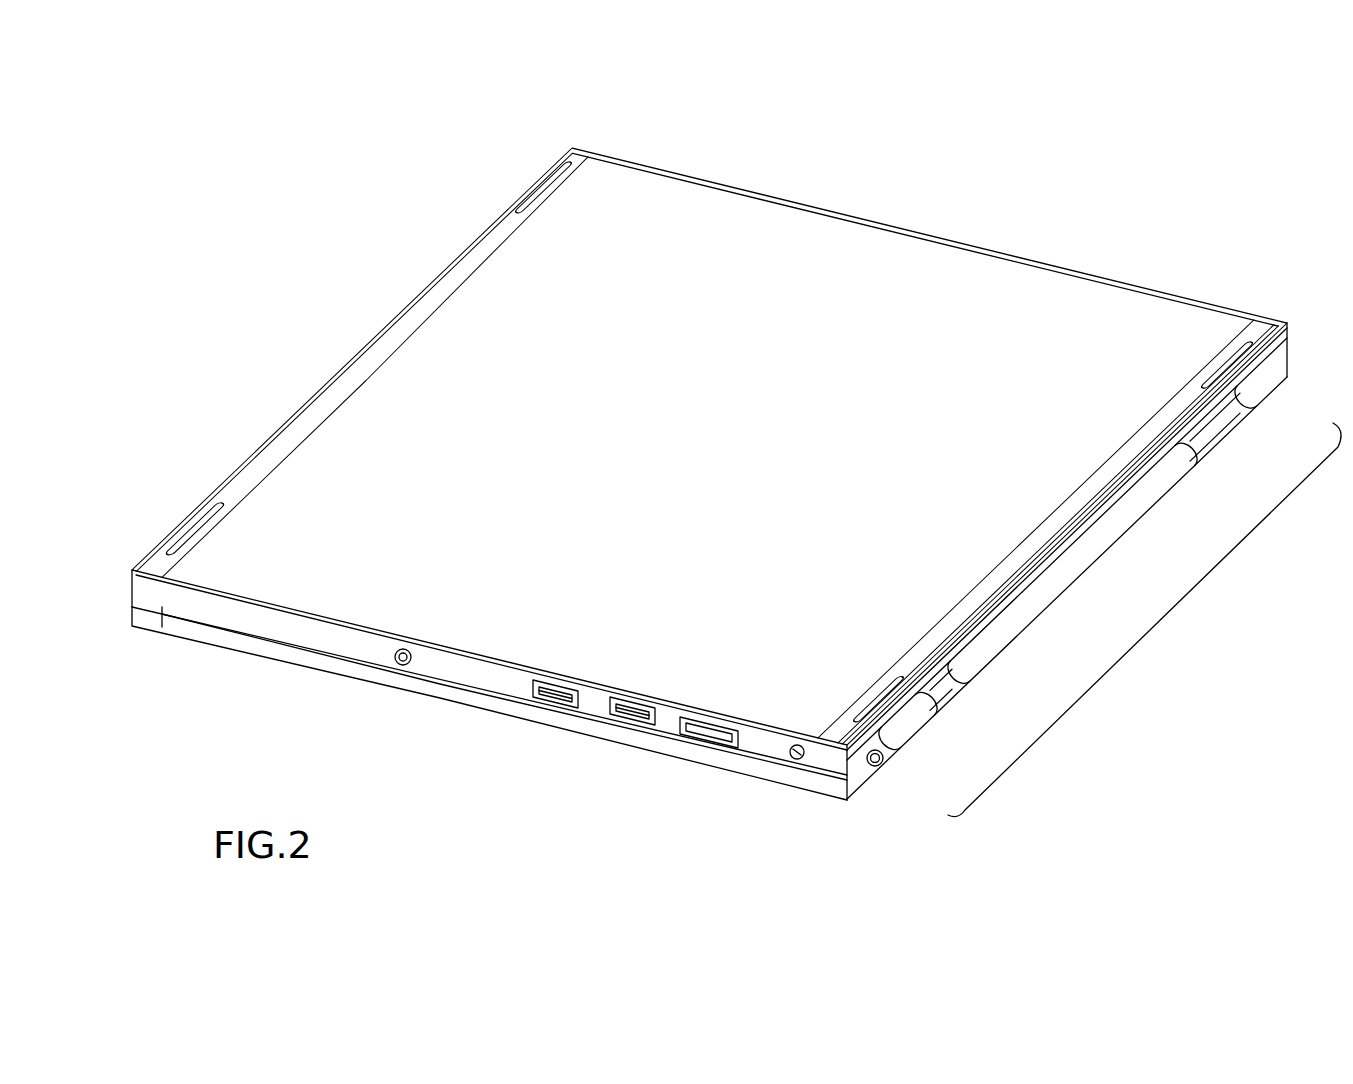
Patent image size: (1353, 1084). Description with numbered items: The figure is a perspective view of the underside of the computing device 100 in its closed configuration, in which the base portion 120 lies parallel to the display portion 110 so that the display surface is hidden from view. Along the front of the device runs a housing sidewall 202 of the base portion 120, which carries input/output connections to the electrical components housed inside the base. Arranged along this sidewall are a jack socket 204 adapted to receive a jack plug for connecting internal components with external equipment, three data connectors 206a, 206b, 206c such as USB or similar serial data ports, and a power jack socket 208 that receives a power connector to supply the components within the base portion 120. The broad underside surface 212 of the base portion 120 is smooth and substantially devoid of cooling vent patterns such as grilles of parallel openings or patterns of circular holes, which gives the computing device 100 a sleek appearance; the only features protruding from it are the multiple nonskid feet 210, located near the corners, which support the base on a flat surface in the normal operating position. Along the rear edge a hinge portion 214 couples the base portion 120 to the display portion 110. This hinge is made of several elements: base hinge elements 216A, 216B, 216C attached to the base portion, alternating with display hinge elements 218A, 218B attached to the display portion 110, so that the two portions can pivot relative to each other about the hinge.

The computing device 100 is at (1038, 171).
The display portion 110 is at (233, 642).
The base portion 120 is at (138, 587).
The housing sidewall 202 is at (318, 640).
The jack socket 204 is at (405, 668).
The data connector 206a is at (535, 698).
The data connector 206b is at (643, 722).
The data connector 206c is at (712, 748).
The power jack socket 208 is at (796, 760).
The nonskid feet 210 is at (575, 157).
The underside surface 212 is at (1075, 295).
The hinge portion 214 is at (1144, 620).
The base hinge element 216A is at (1265, 383).
The base hinge element 216B is at (1138, 512).
The base hinge element 216C is at (893, 752).
The display hinge element 218A is at (1218, 442).
The display hinge element 218B is at (940, 700).